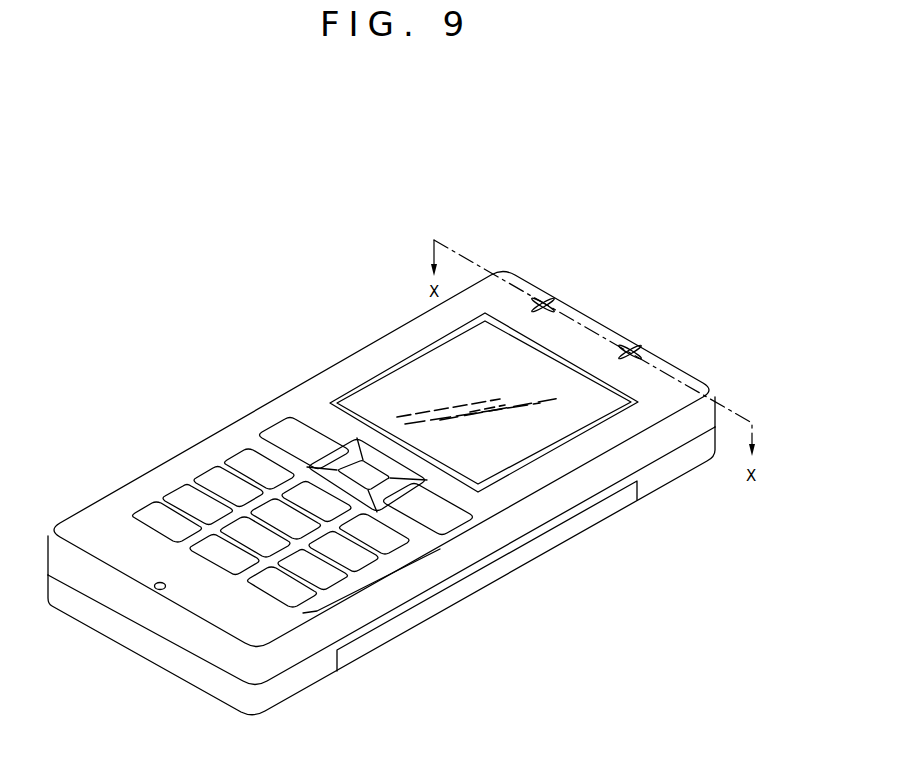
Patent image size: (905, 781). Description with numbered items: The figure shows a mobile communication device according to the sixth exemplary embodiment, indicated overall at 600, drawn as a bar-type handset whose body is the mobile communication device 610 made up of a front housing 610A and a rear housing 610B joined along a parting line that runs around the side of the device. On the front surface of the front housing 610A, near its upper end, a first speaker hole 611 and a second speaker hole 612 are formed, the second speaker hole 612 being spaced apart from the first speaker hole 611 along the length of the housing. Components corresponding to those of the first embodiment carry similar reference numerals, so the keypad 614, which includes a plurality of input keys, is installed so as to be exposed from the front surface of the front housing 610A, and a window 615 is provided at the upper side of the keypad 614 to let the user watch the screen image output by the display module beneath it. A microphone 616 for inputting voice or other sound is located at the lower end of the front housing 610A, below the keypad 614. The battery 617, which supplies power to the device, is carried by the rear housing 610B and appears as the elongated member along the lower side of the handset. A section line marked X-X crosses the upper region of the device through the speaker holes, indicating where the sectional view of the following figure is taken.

The mobile terminal 600 is at (573, 220).
The mobile communication device 610 is at (757, 510).
The front housing 610A is at (697, 426).
The rear housing 610B is at (653, 480).
The first speaker hole 611 is at (558, 302).
The second speaker hole 612 is at (641, 347).
The keypad 614 is at (397, 566).
The window 615 is at (427, 365).
The microphone 616 is at (158, 592).
The battery 617 is at (600, 513).